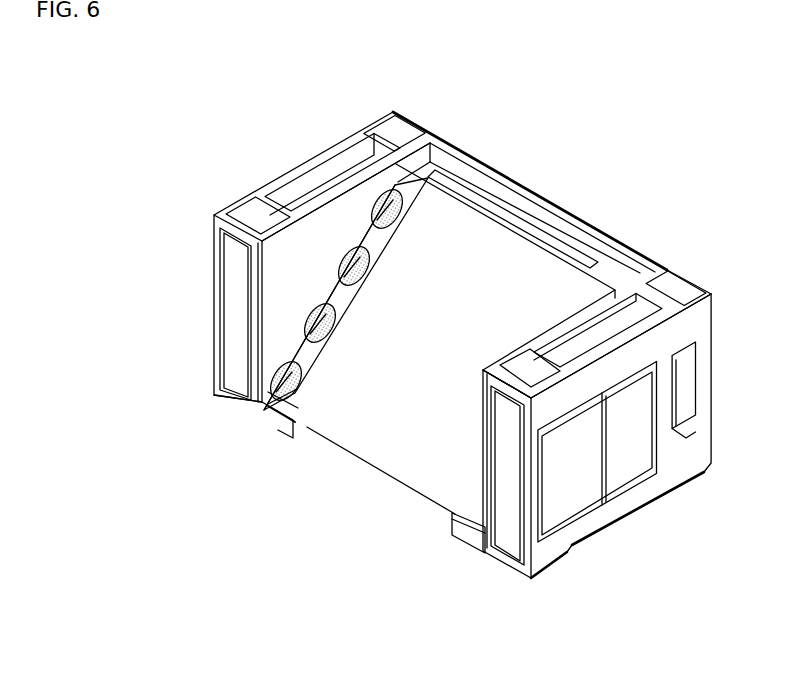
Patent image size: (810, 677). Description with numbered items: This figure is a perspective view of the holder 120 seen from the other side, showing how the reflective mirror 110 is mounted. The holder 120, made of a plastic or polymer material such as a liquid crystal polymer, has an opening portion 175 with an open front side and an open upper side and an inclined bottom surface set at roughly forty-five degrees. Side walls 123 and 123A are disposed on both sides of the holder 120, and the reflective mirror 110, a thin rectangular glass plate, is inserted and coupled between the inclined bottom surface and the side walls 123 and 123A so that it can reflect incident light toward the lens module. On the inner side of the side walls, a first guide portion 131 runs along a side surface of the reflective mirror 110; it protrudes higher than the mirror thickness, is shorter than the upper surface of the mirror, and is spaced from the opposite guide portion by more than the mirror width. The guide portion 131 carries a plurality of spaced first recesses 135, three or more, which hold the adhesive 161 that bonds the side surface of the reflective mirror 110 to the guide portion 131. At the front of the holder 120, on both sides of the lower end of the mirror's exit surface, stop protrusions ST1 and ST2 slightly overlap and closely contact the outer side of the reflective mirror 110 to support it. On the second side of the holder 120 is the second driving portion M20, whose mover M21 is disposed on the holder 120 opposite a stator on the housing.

The reflective mirror 110 is at (497, 258).
The holder 120 is at (706, 276).
The side wall 123 is at (207, 357).
The side wall 123A is at (520, 560).
The first guide portion 131 is at (297, 205).
The first recesses 135 is at (392, 203).
The adhesive 161 is at (363, 237).
The opening portion 175 is at (285, 198).
The second driving portion M20 is at (648, 463).
The mover M21 is at (565, 484).
The stop protrusion ST1 is at (277, 425).
The stop protrusion ST2 is at (473, 537).